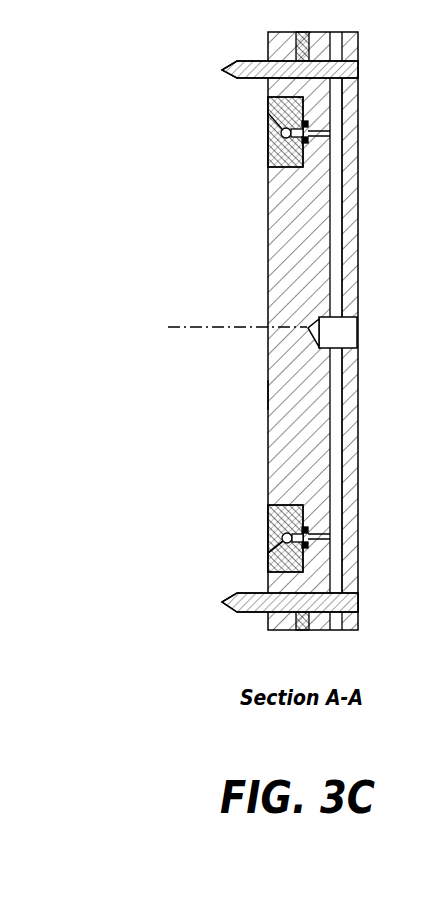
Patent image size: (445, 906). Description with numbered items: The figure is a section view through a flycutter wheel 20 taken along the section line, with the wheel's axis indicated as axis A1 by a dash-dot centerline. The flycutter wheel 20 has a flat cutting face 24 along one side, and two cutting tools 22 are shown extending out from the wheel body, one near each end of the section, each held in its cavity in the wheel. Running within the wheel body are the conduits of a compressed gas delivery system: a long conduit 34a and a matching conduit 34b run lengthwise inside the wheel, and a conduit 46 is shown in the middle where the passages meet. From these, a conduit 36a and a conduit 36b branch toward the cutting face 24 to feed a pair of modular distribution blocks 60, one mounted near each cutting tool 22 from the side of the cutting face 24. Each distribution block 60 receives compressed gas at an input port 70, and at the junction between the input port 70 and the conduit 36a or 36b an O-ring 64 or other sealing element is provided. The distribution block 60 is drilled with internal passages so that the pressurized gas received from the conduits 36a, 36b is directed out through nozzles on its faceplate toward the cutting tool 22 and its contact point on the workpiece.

The flycutter wheel 20 is at (268, 265).
The cutting tool 22 is at (222, 70).
The flat cutting face 24 is at (268, 395).
The conduit 34a is at (342, 187).
The conduit 34b is at (342, 473).
The conduit 36a is at (318, 136).
The conduit 36b is at (318, 527).
The conduit 46 is at (353, 328).
The modular distribution block 60 is at (268, 152).
The O-ring 64 is at (308, 122).
The input port 70 is at (300, 142).
The axis A1 is at (193, 328).